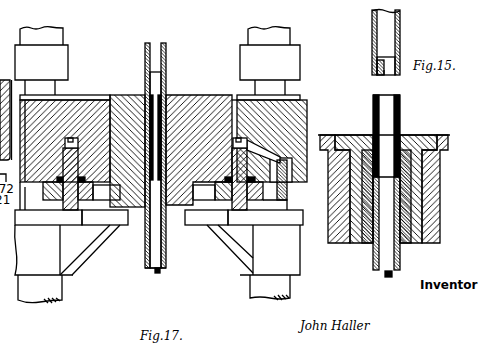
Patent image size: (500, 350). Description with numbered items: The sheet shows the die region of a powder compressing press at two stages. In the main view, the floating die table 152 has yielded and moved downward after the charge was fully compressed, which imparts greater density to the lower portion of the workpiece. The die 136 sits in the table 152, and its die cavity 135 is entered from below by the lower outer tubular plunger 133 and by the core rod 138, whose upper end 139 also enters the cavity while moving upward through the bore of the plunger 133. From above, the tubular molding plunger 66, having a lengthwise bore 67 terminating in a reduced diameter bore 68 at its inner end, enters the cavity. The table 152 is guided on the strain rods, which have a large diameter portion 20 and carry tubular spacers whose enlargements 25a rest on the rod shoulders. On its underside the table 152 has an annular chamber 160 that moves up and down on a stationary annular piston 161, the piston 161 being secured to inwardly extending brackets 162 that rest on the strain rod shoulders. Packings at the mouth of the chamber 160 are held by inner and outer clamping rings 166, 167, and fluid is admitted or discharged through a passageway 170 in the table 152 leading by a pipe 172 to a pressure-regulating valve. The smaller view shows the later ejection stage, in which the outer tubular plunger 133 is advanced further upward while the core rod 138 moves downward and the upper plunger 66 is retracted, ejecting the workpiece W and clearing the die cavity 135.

In FIG. 17, the large diameter portion 20 is at (35, 298).
In FIG. 17, the enlargement 25a is at (157, 61).
In FIG. 17, the tubular molding plunger 66 is at (167, 45).
In FIG. 15, the tubular molding plunger 66 is at (400, 15).
In FIG. 15, the bore 67 is at (388, 68).
In FIG. 15, the reduced diameter bore 68 is at (373, 67).
In FIG. 17, the lower outer tubular plunger 133 is at (166, 247).
In FIG. 15, the lower outer tubular plunger 133 is at (400, 253).
In FIG. 17, the die cavity 135 is at (180, 97).
In FIG. 15, the die cavity 135 is at (372, 147).
In FIG. 17, the die 136 is at (122, 97).
In FIG. 15, the die 136 is at (412, 148).
In FIG. 17, the core rod 138 is at (157, 274).
In FIG. 15, the core rod 138 is at (382, 273).
In FIG. 17, the upper end 139 is at (157, 77).
In FIG. 17, the floating table 152 is at (97, 97).
In FIG. 15, the floating table 152 is at (443, 148).
In FIG. 17, the annular chamber 160 is at (72, 138).
In FIG. 17, the annular piston 161 is at (78, 207).
In FIG. 17, the brackets 162 is at (75, 247).
In FIG. 17, the inner clamping ring 166 is at (153, 191).
In FIG. 17, the outer clamping ring 167 is at (43, 188).
In FIG. 17, the passageway 170 is at (270, 143).
In FIG. 17, the pipe 172 is at (288, 195).
In FIG. 15, the workpiece W is at (400, 112).